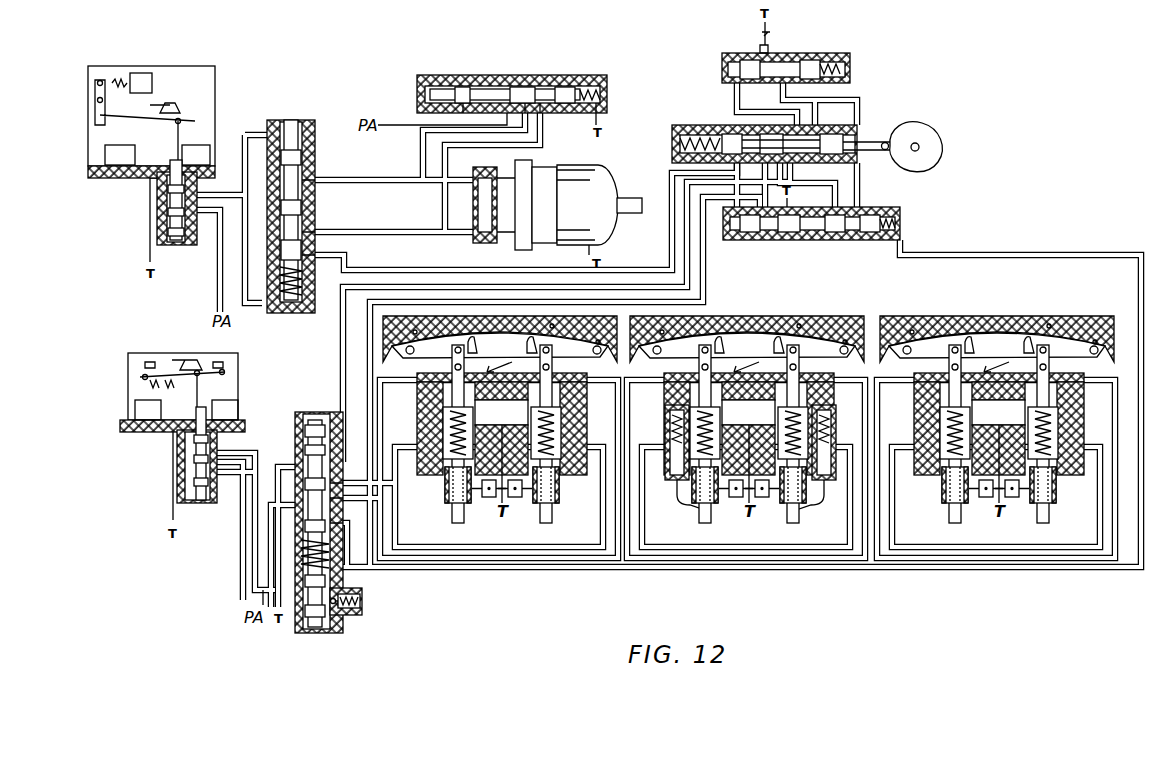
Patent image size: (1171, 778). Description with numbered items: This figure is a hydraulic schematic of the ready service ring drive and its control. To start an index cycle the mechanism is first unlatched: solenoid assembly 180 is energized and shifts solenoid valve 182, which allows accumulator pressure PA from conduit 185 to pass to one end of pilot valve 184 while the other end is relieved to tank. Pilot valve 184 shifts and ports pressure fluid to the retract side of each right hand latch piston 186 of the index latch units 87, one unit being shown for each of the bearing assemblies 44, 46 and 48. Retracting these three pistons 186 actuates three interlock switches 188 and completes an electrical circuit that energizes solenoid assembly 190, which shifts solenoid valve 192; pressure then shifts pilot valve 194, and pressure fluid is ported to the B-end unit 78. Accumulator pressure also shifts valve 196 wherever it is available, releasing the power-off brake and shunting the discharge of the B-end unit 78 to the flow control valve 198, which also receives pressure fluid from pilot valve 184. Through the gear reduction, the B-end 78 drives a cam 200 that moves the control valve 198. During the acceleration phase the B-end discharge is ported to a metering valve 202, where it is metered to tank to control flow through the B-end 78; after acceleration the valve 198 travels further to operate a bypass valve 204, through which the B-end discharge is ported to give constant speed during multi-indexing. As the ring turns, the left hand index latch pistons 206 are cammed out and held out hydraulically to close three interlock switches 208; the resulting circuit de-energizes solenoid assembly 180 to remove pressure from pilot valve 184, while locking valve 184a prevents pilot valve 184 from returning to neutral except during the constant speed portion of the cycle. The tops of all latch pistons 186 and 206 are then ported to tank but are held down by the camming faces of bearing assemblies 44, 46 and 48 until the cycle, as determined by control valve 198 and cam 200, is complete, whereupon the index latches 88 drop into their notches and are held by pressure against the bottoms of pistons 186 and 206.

The solenoid assembly 190 is at (208, 78).
The solenoid valve 192 is at (184, 238).
The pilot valve 194 is at (297, 168).
The valve 196 is at (524, 88).
The B-end unit 78 is at (568, 214).
The flow control valve 198 is at (730, 135).
The cam 200 is at (920, 133).
The metering valve 202 is at (806, 62).
The bypass valve 204 is at (790, 232).
The solenoid assembly 180 is at (245, 365).
The solenoid valve 182 is at (205, 495).
The pilot valve 184 is at (313, 420).
The locking valve 184a is at (364, 601).
The conduit 185 is at (240, 570).
The bearing assembly 44 is at (508, 328).
The bearing assembly 46 is at (755, 328).
The bearing assembly 48 is at (1005, 328).
The index latch 88 is at (526, 345).
The index latch unit 87 is at (759, 362).
The left hand index latch piston 206 is at (456, 428).
The right hand latch piston 186 is at (548, 428).
The interlock switch 208 is at (487, 497).
The interlock switch 188 is at (513, 497).